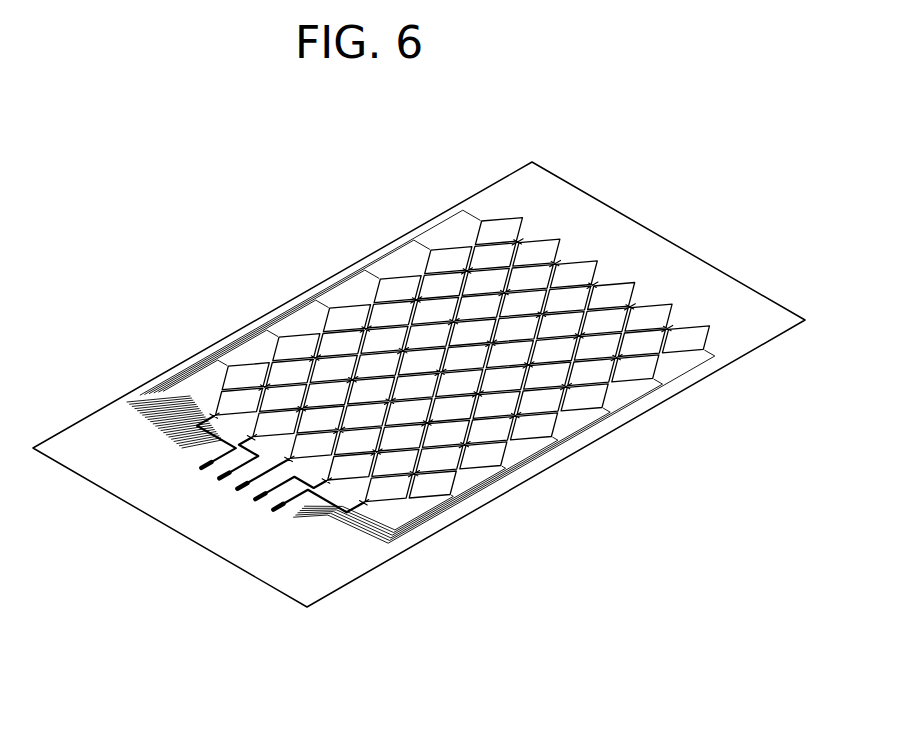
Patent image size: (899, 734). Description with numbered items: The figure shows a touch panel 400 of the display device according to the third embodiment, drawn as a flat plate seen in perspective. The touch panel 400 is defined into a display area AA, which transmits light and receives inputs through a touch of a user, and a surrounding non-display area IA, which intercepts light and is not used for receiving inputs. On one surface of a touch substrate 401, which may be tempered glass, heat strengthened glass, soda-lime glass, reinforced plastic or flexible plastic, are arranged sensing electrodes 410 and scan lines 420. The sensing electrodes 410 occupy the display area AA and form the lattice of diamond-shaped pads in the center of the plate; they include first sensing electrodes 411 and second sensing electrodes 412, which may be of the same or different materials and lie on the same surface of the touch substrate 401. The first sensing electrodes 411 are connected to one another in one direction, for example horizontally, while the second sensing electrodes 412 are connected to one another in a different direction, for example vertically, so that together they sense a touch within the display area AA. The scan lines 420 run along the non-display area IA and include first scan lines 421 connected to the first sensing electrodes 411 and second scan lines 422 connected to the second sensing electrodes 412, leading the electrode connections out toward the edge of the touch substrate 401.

The touch panel 400 is at (417, 420).
The touch substrate 401 is at (477, 190).
The sensing electrodes 410 is at (362, 362).
The first sensing electrodes 411 is at (240, 378).
The second sensing electrodes 412 is at (232, 400).
The scan lines 420 is at (421, 462).
The first scan lines 421 is at (420, 523).
The second scan lines 422 is at (448, 672).
The display area AA is at (303, 327).
The non-display area IA is at (738, 325).